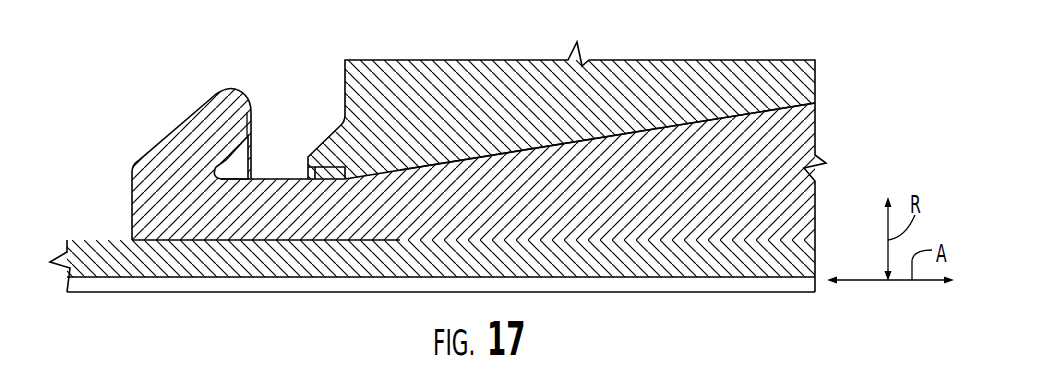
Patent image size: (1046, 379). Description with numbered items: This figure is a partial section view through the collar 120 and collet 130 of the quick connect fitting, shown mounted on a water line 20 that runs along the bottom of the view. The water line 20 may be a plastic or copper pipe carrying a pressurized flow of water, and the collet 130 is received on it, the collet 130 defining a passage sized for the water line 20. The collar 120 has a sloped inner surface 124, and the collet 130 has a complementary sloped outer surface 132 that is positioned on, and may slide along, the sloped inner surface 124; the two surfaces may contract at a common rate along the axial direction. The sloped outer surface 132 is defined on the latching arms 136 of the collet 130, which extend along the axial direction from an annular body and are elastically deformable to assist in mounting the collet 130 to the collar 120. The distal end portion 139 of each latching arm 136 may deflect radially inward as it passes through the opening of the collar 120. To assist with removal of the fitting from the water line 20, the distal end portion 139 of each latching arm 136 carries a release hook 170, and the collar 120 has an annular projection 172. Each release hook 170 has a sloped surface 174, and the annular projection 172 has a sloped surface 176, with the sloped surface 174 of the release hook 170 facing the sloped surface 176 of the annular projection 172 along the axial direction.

The water line 20 is at (146, 265).
The collar 120 is at (623, 83).
The sloped inner surface 124 is at (558, 154).
The collet 130 is at (720, 135).
The sloped outer surface 132 is at (513, 140).
The latching arm 136 is at (260, 227).
The distal end portion 139 is at (121, 192).
The release hook 170 is at (195, 147).
The annular projection 172 is at (333, 173).
The sloped surface 174 is at (246, 159).
The sloped surface 176 is at (328, 124).